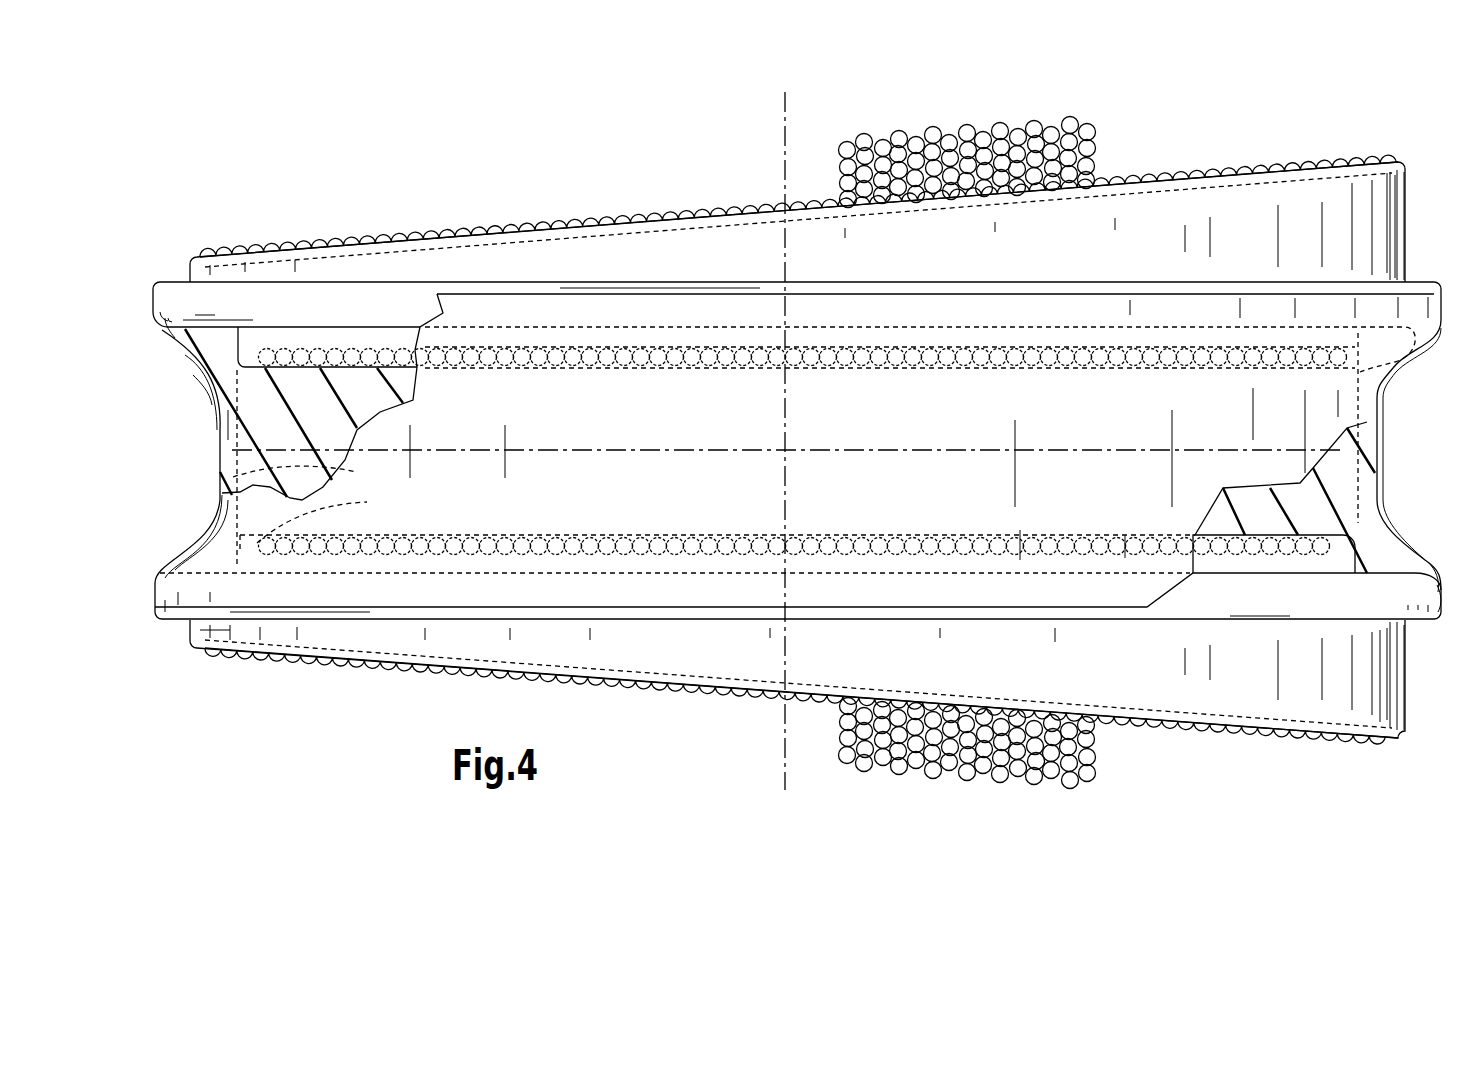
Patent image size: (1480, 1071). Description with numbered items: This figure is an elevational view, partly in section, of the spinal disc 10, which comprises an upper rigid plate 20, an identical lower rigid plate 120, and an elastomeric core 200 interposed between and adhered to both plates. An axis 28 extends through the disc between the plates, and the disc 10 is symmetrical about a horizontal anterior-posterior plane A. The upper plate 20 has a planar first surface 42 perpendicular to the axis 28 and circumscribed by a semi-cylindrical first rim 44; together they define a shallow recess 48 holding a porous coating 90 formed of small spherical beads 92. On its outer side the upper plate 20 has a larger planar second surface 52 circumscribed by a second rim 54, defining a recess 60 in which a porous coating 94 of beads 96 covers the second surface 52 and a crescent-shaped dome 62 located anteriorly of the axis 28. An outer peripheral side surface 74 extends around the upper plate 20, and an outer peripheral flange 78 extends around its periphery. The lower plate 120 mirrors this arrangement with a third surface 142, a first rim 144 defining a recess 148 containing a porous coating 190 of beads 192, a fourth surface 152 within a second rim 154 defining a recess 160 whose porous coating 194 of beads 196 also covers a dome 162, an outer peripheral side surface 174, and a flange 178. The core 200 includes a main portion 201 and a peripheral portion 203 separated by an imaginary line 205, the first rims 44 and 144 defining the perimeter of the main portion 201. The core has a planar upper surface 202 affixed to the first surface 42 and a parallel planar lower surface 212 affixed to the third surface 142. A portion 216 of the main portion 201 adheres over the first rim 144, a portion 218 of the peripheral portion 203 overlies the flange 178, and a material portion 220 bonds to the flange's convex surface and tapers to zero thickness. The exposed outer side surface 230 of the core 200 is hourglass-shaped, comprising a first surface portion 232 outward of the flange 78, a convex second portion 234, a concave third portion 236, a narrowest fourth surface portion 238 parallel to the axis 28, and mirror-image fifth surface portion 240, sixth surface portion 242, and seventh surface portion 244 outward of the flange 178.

The disc 10 is at (552, 117).
The upper rigid plate 20 is at (696, 167).
The axis 28 is at (790, 103).
The first surface 42 is at (680, 350).
The first rim 44 is at (1400, 362).
The recess 48 is at (1015, 352).
The second surface 52 is at (668, 212).
The second rim 54 is at (1404, 160).
The recess 60 is at (757, 200).
The dome 62 is at (933, 114).
The outer peripheral side surface 74 is at (1410, 205).
The outer peripheral flange 78 is at (167, 282).
The porous coating 90 is at (750, 372).
The beads 92 is at (880, 350).
The porous coating 94 is at (443, 219).
The beads 96 is at (575, 212).
The lower rigid plate 120 is at (722, 718).
The third surface 142 is at (688, 540).
The first rim 144 is at (368, 502).
The recess 148 is at (1010, 545).
The fourth surface 152 is at (690, 690).
The second rim 154 is at (1395, 742).
The recess 160 is at (350, 655).
The dome 162 is at (948, 788).
The outer peripheral side surface 174 is at (1410, 692).
The outer peripheral flange 178 is at (190, 650).
The porous coating 190 is at (738, 528).
The beads 192 is at (865, 538).
The porous coating 194 is at (482, 686).
The beads 196 is at (598, 682).
The elastomeric core 200 is at (1390, 448).
The main portion 201 is at (263, 420).
The upper surface 202 is at (385, 350).
The peripheral portion 203 is at (222, 460).
The imaginary line 205 is at (355, 472).
The lower surface 212 is at (573, 552).
The portion 216 is at (1360, 515).
The portion 218 is at (1390, 567).
The material portion 220 is at (1443, 587).
The outer side surface 230 is at (208, 446).
The first surface portion 232 is at (160, 338).
The second portion 234 is at (205, 360).
The third portion 236 is at (200, 387).
The fourth surface portion 238 is at (218, 424).
The fifth surface portion 240 is at (222, 507).
The sixth surface portion 242 is at (162, 566).
The seventh surface portion 244 is at (160, 628).
The anterior-posterior horizontally extending plane A is at (560, 453).